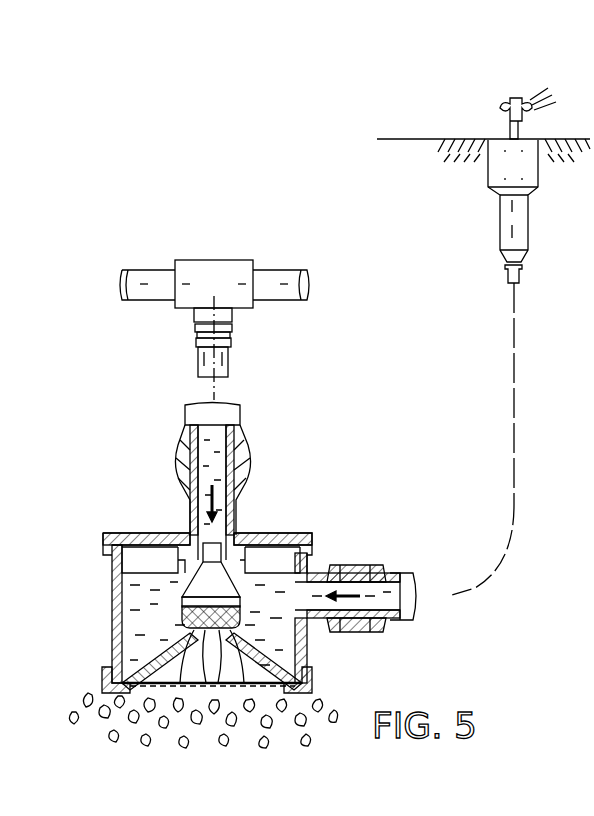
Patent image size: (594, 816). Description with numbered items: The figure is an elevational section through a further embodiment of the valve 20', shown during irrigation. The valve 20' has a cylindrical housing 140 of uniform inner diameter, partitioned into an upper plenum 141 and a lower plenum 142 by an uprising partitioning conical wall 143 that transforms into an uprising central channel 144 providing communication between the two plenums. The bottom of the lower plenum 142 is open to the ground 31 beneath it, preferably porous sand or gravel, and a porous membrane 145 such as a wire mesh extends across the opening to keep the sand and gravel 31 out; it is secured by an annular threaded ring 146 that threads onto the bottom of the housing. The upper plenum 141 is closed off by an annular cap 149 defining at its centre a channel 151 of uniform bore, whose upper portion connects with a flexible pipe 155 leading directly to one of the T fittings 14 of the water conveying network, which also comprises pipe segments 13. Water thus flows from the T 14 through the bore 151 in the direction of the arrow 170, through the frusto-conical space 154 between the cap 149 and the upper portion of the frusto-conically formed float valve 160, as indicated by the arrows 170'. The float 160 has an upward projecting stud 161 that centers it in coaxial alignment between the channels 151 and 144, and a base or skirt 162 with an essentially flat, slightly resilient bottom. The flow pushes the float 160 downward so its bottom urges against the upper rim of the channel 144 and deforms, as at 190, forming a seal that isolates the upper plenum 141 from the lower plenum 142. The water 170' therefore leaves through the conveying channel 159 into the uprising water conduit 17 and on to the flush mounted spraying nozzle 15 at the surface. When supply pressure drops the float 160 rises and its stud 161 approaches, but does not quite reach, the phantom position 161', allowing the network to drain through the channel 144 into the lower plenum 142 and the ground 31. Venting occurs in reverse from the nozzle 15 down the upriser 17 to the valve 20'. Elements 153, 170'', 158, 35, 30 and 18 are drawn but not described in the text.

The pipe segments 13 is at (143, 270).
The T fitting 14 is at (235, 262).
The flexible pipe 155 is at (240, 357).
The channel 151 is at (220, 447).
The threaded stem 153 is at (246, 462).
The arrow 170 is at (265, 483).
The arrows 170' is at (175, 544).
The water flow in side port 170'' is at (387, 568).
The stud 161 is at (171, 518).
The phantom position 161' is at (170, 510).
The frusto-conical space 154 is at (180, 538).
The annular cap 149 is at (107, 537).
The upper plenum 141 is at (282, 597).
The cylindrical housing 140 is at (308, 654).
The side port 158 is at (334, 548).
The conveying channel 159 is at (372, 626).
The uprising pipe 17 is at (418, 573).
The valve 20' is at (353, 653).
The float valve 160 is at (202, 583).
The base or skirt 162 is at (186, 614).
The conical wall 143 is at (145, 660).
The central channel 144 is at (208, 684).
The deformation 190 is at (187, 684).
The lower plenum 142 is at (270, 672).
The annular threaded ring 146 is at (102, 668).
The porous membrane 145 is at (168, 688).
The ground 31 is at (97, 703).
The ground surface 35 is at (410, 138).
The soil 30 is at (443, 183).
The spraying nozzle 15 is at (540, 187).
The sprinkler head 18 is at (552, 95).